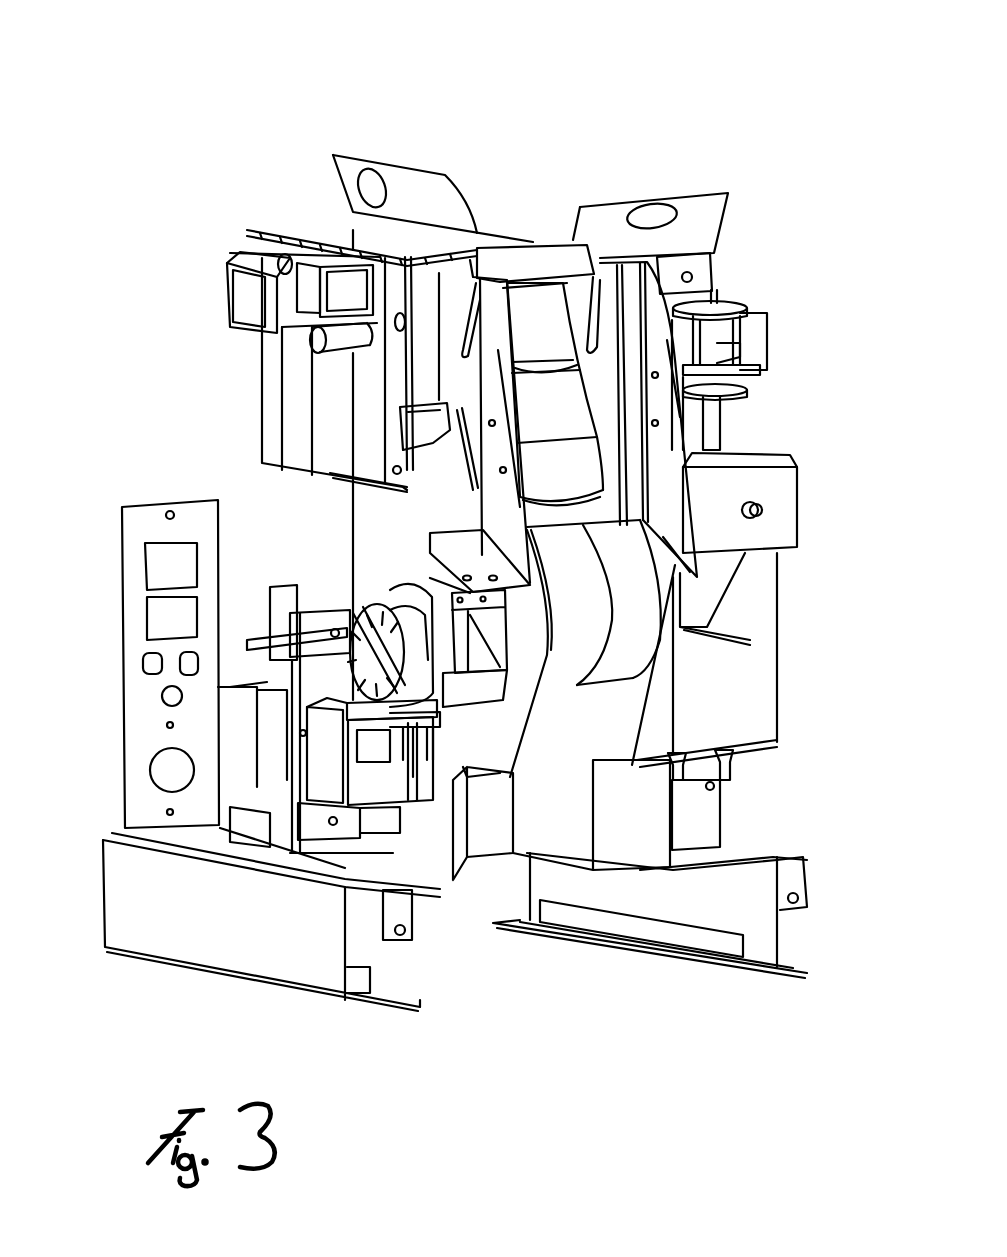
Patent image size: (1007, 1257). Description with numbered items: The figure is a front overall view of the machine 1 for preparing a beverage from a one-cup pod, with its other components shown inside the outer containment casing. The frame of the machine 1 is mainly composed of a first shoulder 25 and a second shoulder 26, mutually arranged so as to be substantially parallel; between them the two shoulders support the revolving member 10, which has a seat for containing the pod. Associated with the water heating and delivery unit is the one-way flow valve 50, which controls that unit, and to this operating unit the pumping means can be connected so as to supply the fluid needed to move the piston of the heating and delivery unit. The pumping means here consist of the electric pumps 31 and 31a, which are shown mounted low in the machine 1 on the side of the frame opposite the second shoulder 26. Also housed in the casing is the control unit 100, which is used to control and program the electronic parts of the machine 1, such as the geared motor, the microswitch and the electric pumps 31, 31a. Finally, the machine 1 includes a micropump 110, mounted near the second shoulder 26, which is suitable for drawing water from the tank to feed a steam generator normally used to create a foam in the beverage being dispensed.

The machine 1 is at (727, 113).
The one-way flow valve 50 is at (558, 257).
The micropump 110 is at (738, 303).
The control unit 100 is at (275, 388).
The first shoulder 25 is at (500, 505).
The electric pump 31 is at (243, 737).
The revolving member 10 is at (567, 660).
The second shoulder 26 is at (630, 703).
The electric pump 31a is at (387, 787).